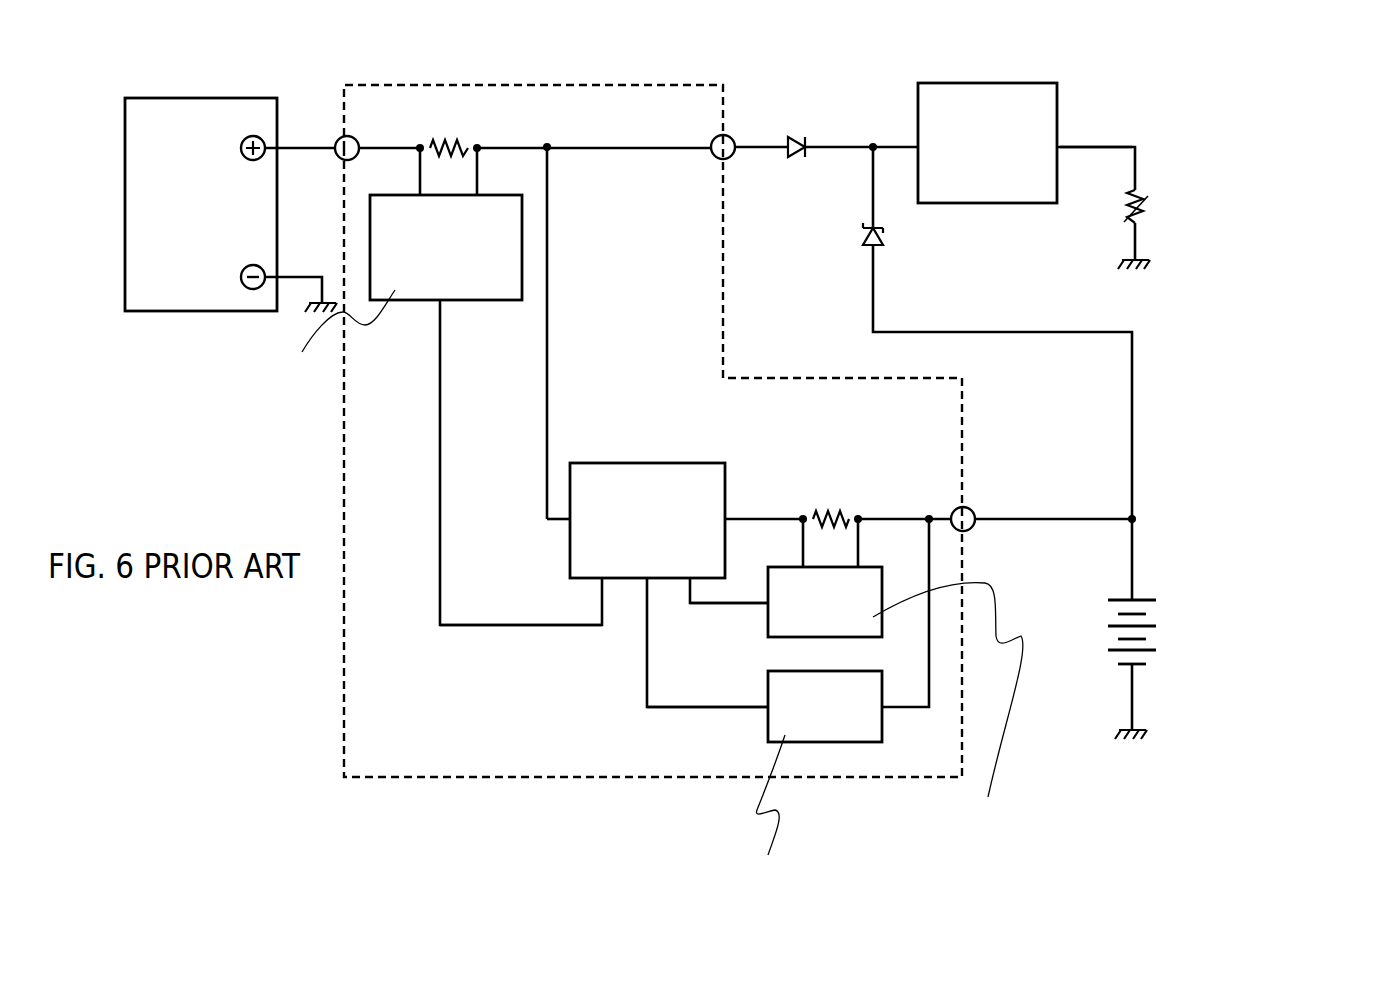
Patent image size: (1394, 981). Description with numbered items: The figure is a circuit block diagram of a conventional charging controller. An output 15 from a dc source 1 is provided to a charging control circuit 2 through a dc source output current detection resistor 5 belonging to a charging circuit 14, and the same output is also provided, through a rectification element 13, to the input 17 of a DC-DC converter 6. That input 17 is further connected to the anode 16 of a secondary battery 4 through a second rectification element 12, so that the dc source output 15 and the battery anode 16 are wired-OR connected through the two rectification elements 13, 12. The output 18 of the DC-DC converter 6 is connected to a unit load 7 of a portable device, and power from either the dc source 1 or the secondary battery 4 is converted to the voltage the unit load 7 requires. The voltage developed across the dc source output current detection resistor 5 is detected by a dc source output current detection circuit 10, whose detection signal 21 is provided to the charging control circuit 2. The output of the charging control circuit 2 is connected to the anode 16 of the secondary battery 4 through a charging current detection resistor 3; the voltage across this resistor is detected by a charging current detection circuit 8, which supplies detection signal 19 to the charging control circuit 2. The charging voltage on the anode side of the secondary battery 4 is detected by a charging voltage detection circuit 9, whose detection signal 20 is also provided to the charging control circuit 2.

The dc source 1 is at (238, 98).
The charging control circuit 2 is at (685, 463).
The charging current detection resistor 3 is at (838, 517).
The secondary battery 4 is at (1158, 604).
The dc source output current detection resistor 5 is at (458, 143).
The DC-DC converter 6 is at (1013, 83).
The unit load 7 is at (1148, 196).
The charging current detection circuit 8 is at (872, 567).
The charging voltage detection circuit 9 is at (870, 671).
The dc source output current detection circuit 10 is at (498, 300).
The rectification element 12 is at (876, 248).
The rectification element 13 is at (800, 158).
The charging circuit 14 is at (497, 85).
The output 15 is at (288, 148).
The anode 16 is at (1028, 519).
The input 17 is at (828, 147).
The output 18 is at (1080, 147).
The detection signal 19 is at (716, 603).
The detection signal 20 is at (715, 707).
The detection signal 21 is at (478, 625).